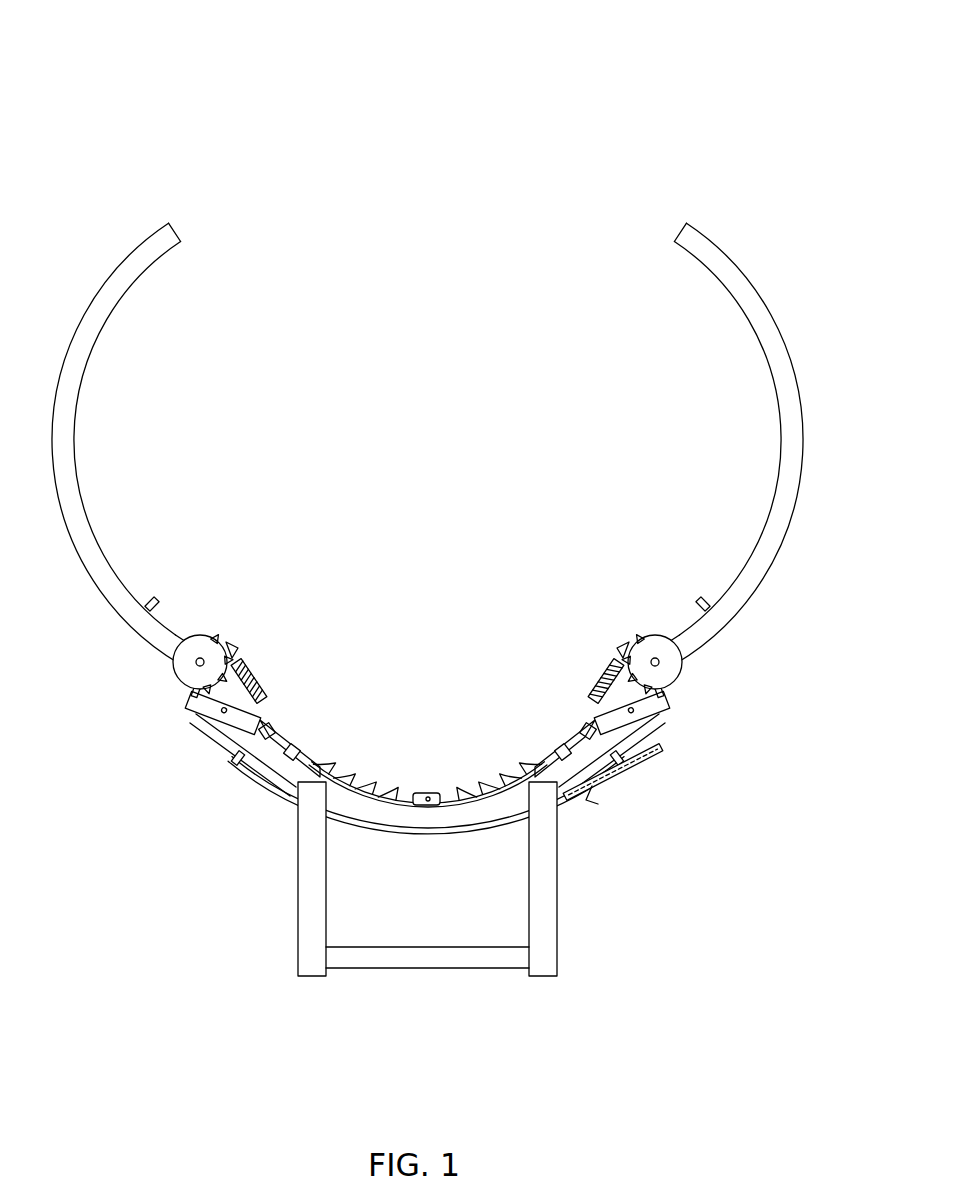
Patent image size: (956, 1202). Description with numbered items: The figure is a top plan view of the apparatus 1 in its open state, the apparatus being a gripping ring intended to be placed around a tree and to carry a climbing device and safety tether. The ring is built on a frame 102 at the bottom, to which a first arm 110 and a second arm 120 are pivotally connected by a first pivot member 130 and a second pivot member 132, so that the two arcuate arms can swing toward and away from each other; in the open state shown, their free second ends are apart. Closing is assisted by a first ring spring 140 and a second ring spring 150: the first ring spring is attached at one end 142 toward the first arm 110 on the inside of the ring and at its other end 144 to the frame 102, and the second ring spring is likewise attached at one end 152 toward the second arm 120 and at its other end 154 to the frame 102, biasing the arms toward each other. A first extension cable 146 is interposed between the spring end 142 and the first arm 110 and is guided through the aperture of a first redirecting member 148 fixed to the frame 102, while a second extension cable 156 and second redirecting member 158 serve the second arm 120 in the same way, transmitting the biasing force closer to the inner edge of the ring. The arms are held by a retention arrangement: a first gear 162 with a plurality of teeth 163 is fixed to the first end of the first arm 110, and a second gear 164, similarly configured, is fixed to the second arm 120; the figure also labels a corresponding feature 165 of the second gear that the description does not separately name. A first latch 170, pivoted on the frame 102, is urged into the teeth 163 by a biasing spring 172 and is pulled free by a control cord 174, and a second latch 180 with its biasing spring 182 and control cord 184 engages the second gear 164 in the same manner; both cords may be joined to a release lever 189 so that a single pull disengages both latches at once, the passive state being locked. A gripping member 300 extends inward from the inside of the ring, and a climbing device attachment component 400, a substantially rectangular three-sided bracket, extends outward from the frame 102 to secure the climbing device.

The apparatus 1 is at (397, 185).
The frame 102 is at (287, 770).
The first arm 110 is at (79, 397).
The second arm 120 is at (772, 383).
The first pivot member 130 is at (213, 648).
The second pivot member 132 is at (650, 642).
The first ring spring 140 is at (265, 690).
The first end of first ring spring 142 is at (243, 663).
The other end of first ring spring 144 is at (420, 791).
The first extension cable 146 is at (173, 618).
The first redirecting member 148 is at (297, 757).
The second ring spring 150 is at (593, 697).
The first end of second ring spring 152 is at (620, 653).
The other end of second ring spring 154 is at (437, 791).
The second extension cable 156 is at (683, 620).
The second redirecting member 158 is at (563, 730).
The first gear 162 is at (173, 660).
The plurality of teeth 163 is at (233, 648).
The second gear 164 is at (683, 663).
The second pawl tooth 165 is at (623, 657).
The first latch 170 is at (177, 697).
The biasing spring 172 is at (285, 735).
The control cord 174 is at (213, 740).
The second latch 180 is at (667, 703).
The biasing spring 182 is at (583, 717).
The control cord 184 is at (660, 717).
The release lever 189 is at (603, 790).
The gripping member 300 is at (498, 787).
The climbing device attachment component 400 is at (298, 938).